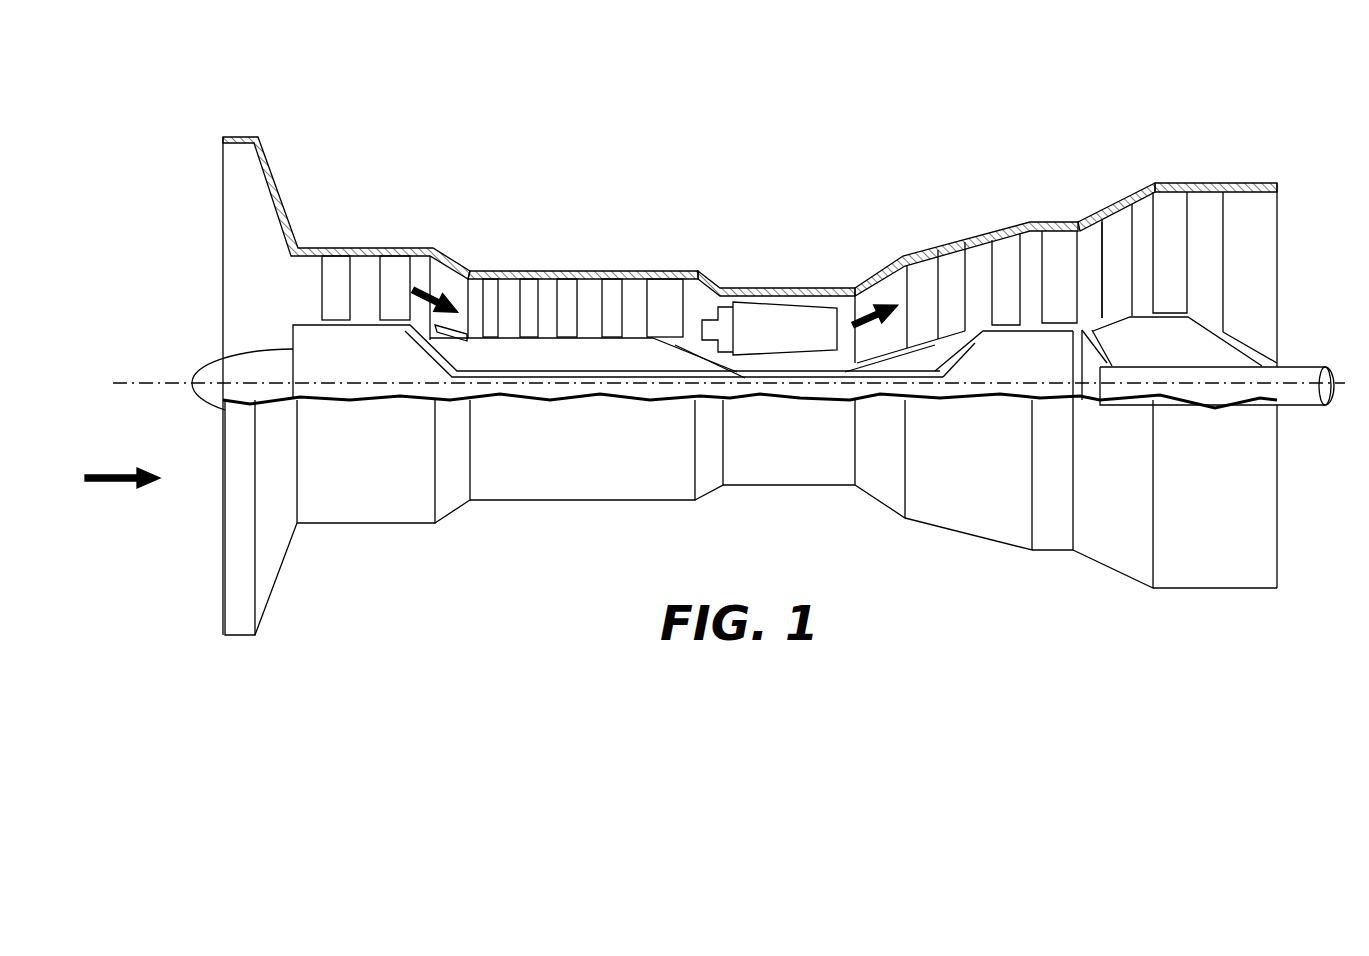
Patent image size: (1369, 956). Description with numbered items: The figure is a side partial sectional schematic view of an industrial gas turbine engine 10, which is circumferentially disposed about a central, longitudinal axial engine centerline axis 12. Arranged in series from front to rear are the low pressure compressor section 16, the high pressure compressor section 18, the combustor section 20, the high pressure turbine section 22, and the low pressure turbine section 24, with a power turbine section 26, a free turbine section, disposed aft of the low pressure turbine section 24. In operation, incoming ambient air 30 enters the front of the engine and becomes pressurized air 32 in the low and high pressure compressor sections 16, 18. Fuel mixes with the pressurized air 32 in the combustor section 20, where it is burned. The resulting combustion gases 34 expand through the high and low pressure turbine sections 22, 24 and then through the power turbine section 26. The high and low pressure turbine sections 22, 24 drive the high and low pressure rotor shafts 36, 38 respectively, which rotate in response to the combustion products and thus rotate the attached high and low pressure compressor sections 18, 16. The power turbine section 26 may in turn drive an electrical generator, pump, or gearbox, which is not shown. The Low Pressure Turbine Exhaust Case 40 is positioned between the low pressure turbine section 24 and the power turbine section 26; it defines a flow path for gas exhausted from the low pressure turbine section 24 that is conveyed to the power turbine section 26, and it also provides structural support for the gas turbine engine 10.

The gas turbine engine 10 is at (855, 130).
The axial engine centerline axis 12 is at (160, 382).
The low pressure compressor section 16 is at (358, 232).
The high pressure compressor section 18 is at (603, 242).
The combustor section 20 is at (752, 282).
The high pressure turbine section 22 is at (954, 237).
The low pressure turbine section 24 is at (1064, 204).
The power turbine section 26 is at (1219, 176).
The incoming ambient air 30 is at (120, 473).
The pressurized air 32 is at (443, 312).
The combustion gases 34 is at (868, 303).
The high pressure rotor shaft 36 is at (677, 350).
The low pressure rotor shaft 38 is at (448, 362).
The Low Pressure Turbine Exhaust Case 40 is at (1090, 221).